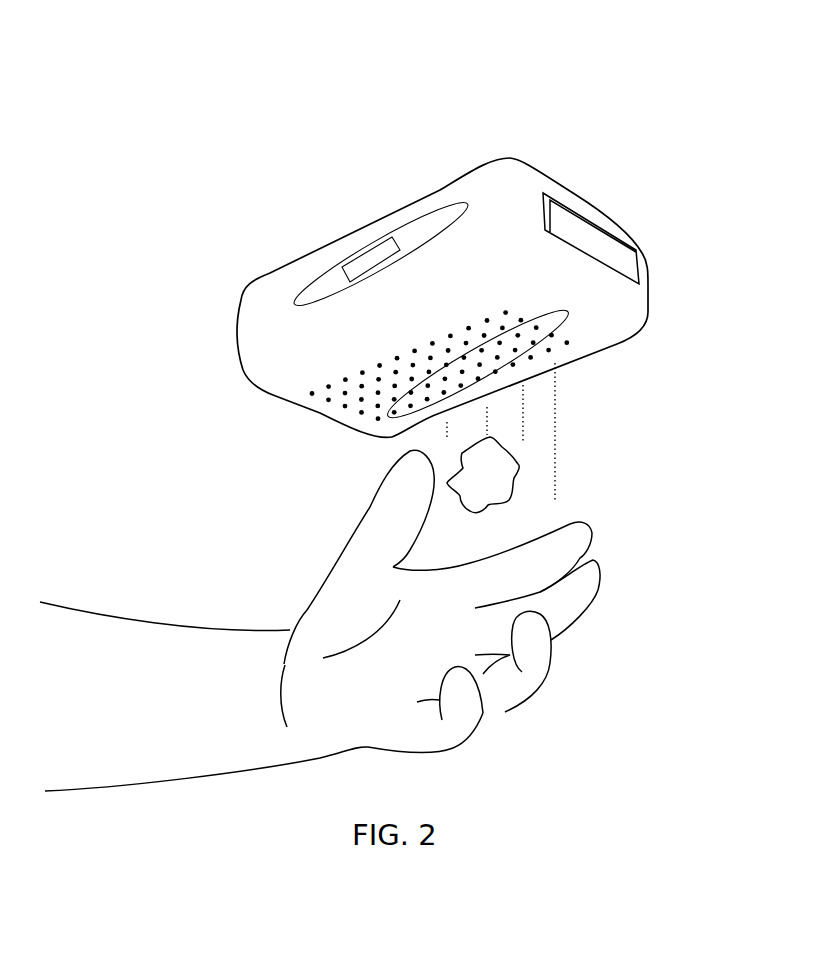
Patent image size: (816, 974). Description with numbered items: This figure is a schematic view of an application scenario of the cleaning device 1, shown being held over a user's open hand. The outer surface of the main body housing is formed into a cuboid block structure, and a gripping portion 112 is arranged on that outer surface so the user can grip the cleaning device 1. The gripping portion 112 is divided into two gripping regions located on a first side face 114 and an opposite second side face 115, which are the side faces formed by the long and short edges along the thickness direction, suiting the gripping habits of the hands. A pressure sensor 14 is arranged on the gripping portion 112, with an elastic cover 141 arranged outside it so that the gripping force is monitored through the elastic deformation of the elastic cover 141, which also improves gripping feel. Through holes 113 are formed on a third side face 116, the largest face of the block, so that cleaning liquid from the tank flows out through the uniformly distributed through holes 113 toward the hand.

The cleaning device 1 is at (165, 169).
The gripping portion 112 is at (313, 267).
The through holes 113 is at (375, 377).
The first side face 114 is at (275, 318).
The second side face 115 is at (578, 363).
The third side face 116 is at (296, 390).
The pressure sensor 14 is at (382, 262).
The elastic cover 141 is at (330, 272).